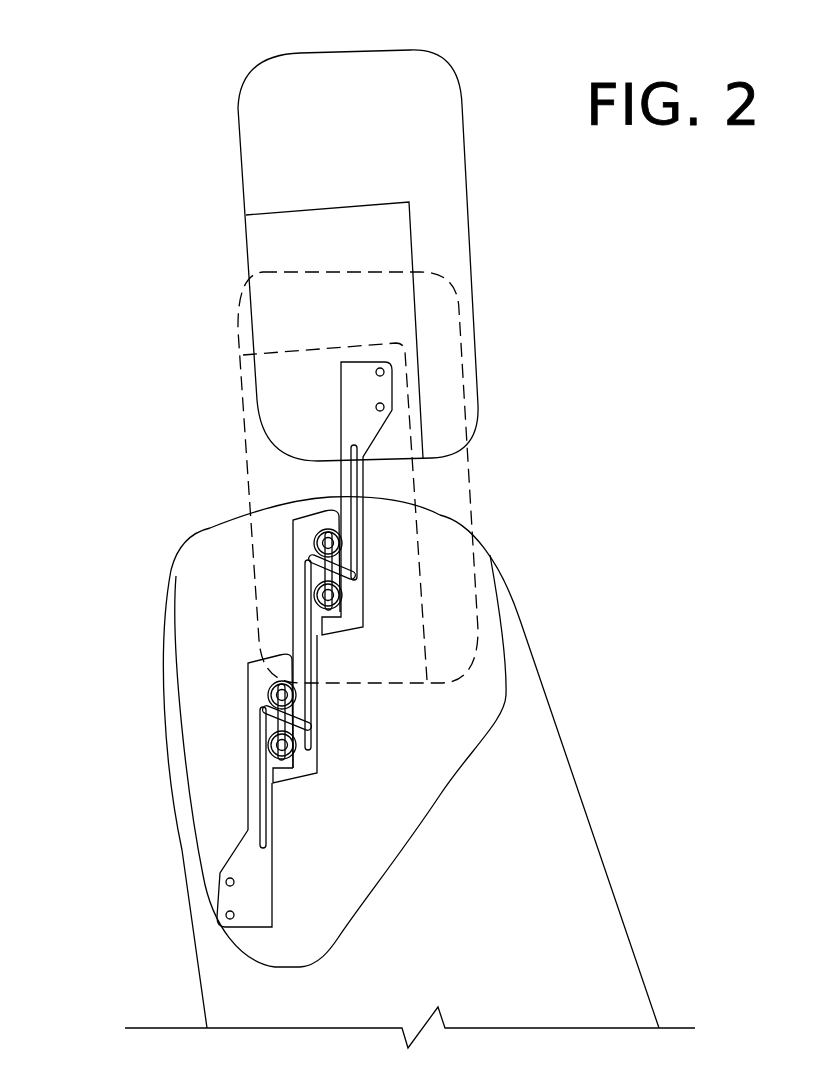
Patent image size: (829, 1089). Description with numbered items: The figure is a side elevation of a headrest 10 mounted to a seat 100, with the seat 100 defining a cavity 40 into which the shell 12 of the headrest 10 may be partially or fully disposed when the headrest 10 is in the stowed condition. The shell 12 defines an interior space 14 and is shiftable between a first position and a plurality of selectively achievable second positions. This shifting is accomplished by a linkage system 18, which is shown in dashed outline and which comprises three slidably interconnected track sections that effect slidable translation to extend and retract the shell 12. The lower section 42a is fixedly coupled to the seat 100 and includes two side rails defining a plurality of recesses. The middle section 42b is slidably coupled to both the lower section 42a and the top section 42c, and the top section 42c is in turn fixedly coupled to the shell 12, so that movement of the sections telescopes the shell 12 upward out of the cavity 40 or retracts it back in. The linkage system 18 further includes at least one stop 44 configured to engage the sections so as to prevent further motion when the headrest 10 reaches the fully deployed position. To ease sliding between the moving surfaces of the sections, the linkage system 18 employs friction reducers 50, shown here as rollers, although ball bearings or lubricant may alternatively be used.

The headrest 10 is at (156, 69).
The shell 12 is at (242, 177).
The interior space 14 is at (340, 257).
The linkage system 18 is at (257, 632).
The seat 100 is at (206, 534).
The cavity 40 is at (403, 743).
The lower section 42a is at (248, 773).
The middle section 42b is at (293, 588).
The top section 42c is at (340, 418).
The stop 44 is at (336, 515).
The friction reducers 50 is at (280, 728).